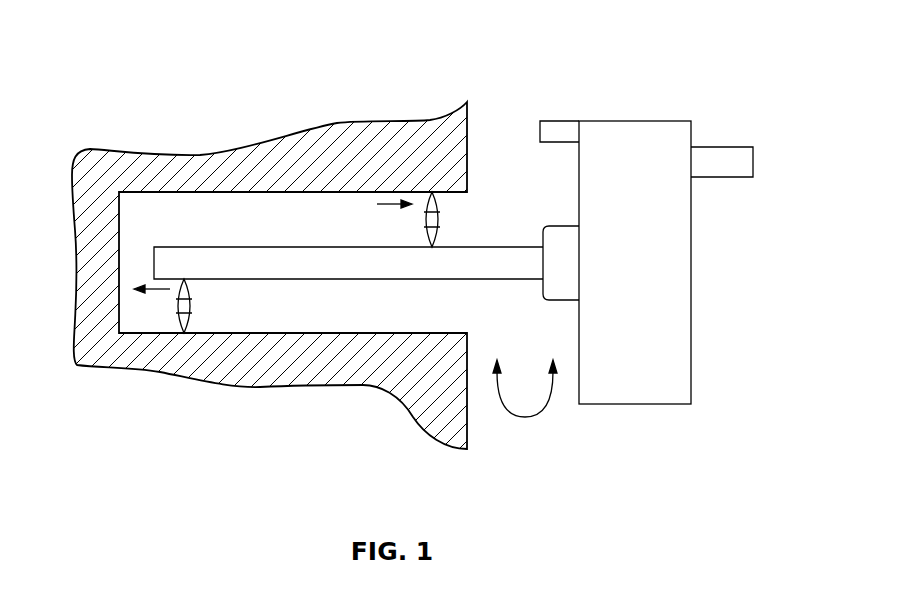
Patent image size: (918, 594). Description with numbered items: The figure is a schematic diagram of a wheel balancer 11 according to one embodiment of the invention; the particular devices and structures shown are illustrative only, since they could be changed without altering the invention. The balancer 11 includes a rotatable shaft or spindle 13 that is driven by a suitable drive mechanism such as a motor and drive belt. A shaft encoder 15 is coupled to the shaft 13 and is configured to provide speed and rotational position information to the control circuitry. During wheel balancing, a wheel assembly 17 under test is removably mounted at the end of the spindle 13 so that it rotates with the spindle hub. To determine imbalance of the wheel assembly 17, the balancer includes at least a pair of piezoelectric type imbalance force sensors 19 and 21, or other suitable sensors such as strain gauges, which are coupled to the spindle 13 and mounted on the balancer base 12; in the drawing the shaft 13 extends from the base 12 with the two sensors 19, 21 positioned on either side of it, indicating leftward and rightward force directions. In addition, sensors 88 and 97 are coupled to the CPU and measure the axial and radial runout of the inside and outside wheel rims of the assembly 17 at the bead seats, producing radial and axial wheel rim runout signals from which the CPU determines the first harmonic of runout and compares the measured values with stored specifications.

The wheel balancer 11 is at (523, 418).
The balancer base 12 is at (382, 171).
The shaft or spindle 13 is at (503, 280).
The shaft encoder 15 is at (558, 226).
The wheel assembly 17 is at (692, 348).
The imbalance force sensor 19 is at (193, 310).
The imbalance force sensor 21 is at (441, 223).
The runout sensor 88 is at (559, 121).
The runout sensor 97 is at (722, 147).